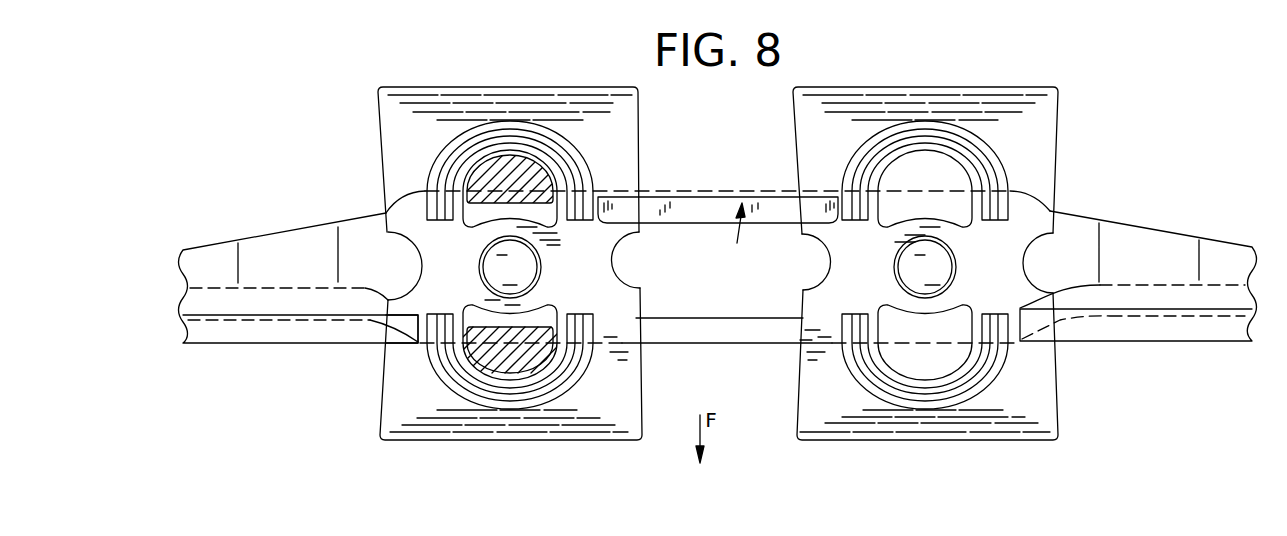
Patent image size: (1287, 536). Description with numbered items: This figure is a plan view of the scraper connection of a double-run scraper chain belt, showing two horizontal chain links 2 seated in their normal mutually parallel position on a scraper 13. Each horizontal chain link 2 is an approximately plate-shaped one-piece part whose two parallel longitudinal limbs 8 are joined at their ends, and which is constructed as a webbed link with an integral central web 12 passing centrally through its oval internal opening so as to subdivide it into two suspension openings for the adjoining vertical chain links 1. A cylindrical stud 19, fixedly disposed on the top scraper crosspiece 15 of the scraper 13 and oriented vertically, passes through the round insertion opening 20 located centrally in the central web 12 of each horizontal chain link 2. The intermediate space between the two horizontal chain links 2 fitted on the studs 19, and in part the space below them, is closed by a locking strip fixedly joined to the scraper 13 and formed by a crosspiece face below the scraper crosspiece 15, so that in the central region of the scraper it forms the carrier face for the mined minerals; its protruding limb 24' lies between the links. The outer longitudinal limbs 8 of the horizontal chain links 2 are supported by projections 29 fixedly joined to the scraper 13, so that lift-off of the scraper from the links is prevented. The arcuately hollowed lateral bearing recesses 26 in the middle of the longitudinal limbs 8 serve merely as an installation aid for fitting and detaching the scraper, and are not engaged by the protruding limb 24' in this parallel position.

The vertical chain link 1 is at (495, 178).
The horizontal chain link 2 is at (447, 428).
The longitudinal limb 8 is at (381, 401).
The central web 12 is at (493, 227).
The scraper 13 is at (280, 307).
The scraper crosspiece 15 is at (743, 333).
The stud 19 is at (493, 272).
The insertion opening 20 is at (538, 281).
The protruding limb 24' is at (718, 232).
The bearing recess 26 is at (410, 264).
The projection 29 is at (414, 322).